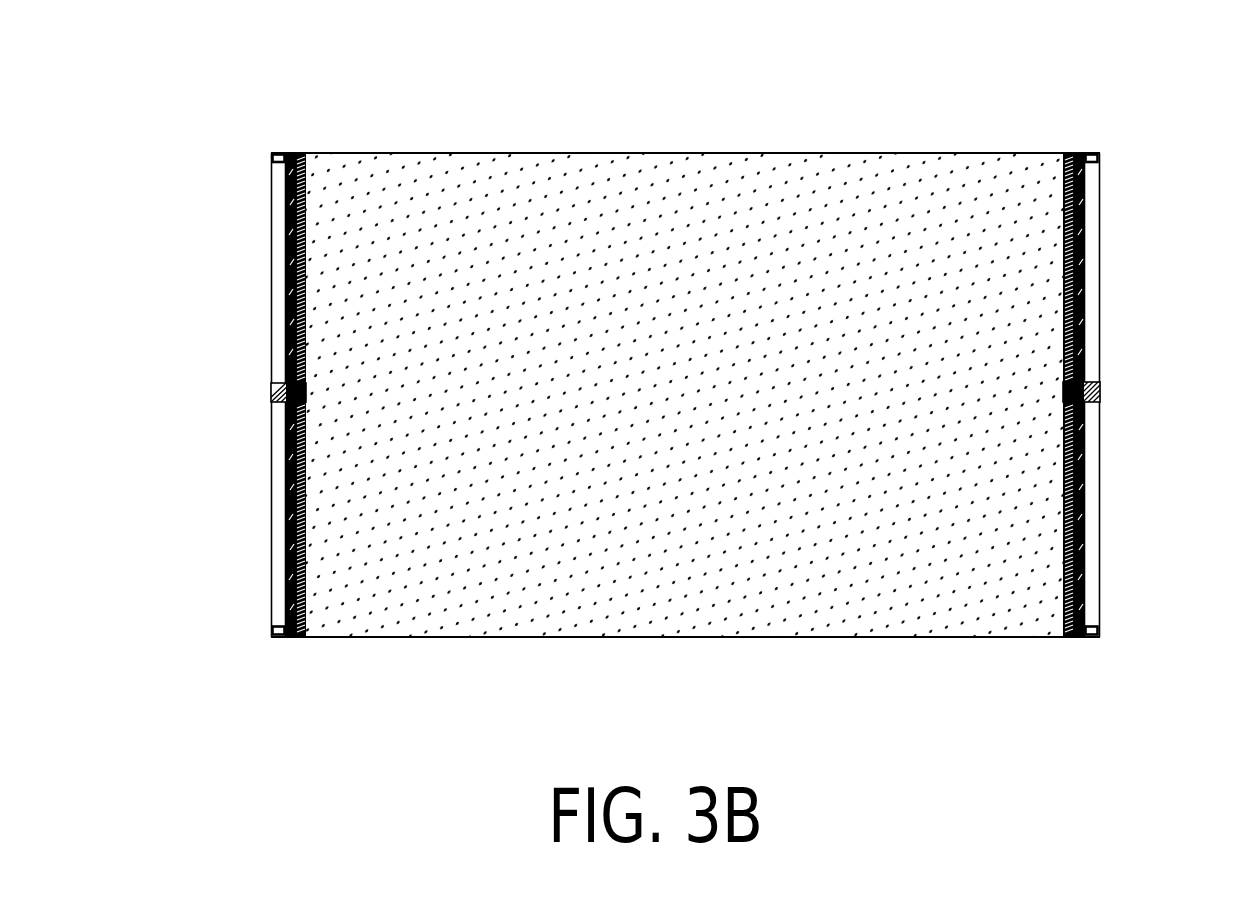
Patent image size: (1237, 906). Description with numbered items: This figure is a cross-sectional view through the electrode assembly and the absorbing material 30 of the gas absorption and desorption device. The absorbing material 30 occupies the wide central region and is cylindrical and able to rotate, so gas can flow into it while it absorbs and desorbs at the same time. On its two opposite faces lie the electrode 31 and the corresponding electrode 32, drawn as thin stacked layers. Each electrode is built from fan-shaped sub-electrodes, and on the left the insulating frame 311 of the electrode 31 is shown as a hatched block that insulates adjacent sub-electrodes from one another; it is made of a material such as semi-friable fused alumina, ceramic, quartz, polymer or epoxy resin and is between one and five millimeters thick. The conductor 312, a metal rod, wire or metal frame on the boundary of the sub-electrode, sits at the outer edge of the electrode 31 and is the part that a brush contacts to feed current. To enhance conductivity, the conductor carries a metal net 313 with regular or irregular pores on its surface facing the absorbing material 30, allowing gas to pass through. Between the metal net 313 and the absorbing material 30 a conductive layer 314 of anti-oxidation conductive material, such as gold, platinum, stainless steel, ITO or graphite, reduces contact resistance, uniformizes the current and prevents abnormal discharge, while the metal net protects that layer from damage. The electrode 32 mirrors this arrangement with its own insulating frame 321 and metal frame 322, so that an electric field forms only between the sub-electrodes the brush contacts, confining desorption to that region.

The absorbing material 30 is at (581, 193).
The electrode 31 is at (256, 146).
The electrode 32 is at (1108, 132).
The insulating frame 311 is at (272, 396).
The conductor 312 is at (278, 151).
The metal net 313 is at (287, 310).
The conductive layer 314 is at (300, 638).
The insulating frame 321 is at (1100, 398).
The metal frame 322 is at (1088, 150).